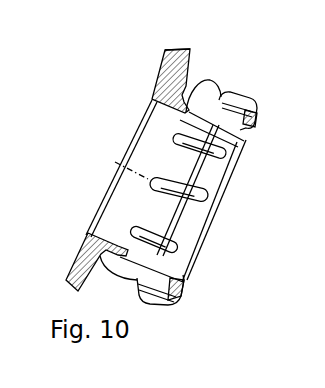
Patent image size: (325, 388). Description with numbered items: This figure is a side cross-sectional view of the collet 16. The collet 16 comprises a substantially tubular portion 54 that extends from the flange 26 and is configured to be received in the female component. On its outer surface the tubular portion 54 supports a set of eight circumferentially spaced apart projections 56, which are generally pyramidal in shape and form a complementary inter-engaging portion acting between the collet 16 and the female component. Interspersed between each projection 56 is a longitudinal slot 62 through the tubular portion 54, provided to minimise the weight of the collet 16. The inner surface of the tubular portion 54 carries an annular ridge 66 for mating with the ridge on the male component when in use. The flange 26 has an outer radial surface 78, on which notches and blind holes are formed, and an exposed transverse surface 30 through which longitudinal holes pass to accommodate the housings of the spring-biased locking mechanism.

The collet 16 is at (110, 76).
The exposed transverse surface 30 is at (152, 67).
The outer radial surface 78 is at (188, 43).
The tubular portion 54 is at (187, 108).
The projections 56 is at (240, 103).
The flange 26 is at (84, 235).
The annular ridge 66 is at (205, 177).
The longitudinal slot 62 is at (202, 212).